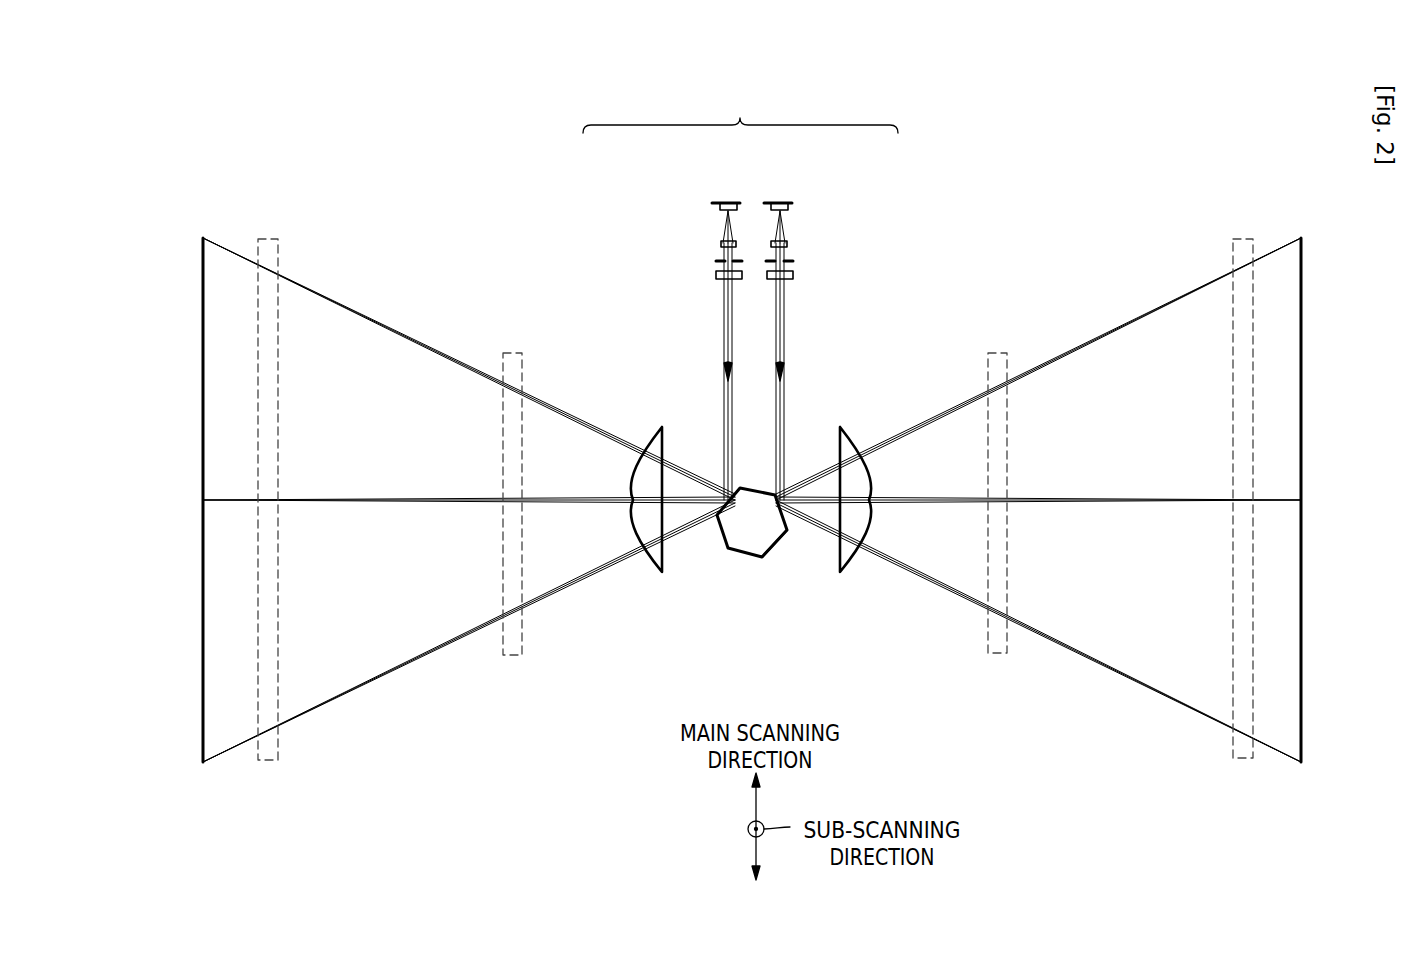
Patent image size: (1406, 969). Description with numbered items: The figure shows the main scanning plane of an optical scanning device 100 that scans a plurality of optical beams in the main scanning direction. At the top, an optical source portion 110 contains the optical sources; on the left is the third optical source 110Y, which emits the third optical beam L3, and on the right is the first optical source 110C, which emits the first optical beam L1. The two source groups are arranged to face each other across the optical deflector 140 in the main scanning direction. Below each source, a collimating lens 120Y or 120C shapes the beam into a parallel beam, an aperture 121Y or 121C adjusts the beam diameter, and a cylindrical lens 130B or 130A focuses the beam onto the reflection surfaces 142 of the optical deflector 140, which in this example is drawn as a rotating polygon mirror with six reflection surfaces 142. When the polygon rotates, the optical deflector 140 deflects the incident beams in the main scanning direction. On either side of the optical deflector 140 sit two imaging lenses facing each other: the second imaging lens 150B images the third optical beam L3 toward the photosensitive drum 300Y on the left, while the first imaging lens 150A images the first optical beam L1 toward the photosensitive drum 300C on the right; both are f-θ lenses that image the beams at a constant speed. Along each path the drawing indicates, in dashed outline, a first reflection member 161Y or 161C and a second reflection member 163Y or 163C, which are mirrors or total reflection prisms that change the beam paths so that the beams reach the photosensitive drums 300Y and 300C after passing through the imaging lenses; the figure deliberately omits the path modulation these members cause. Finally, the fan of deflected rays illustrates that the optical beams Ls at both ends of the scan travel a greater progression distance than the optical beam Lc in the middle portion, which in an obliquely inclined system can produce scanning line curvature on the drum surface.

The optical scanning device 100 is at (375, 123).
The optical source portion 110 is at (740, 111).
The third optical source 110Y is at (722, 203).
The first optical source 110C is at (783, 203).
The collimating lens 120Y is at (720, 243).
The collimating lens 120C is at (788, 243).
The aperture 121Y is at (715, 262).
The aperture 121C is at (793, 262).
The cylindrical lens 130B is at (716, 278).
The cylindrical lens 130A is at (793, 278).
The third optical beam L3 is at (692, 355).
The first optical beam L1 is at (816, 355).
The optical deflector 140 is at (753, 548).
The reflection surface 142 is at (787, 545).
The second imaging lens 150B is at (660, 574).
The first imaging lens 150A is at (841, 574).
The optical beams at both ends Ls is at (365, 687).
The optical beam in the middle portion Lc is at (227, 500).
The first reflection member 161Y is at (511, 656).
The first reflection member 161C is at (998, 654).
The second reflection member 163Y is at (268, 761).
The second reflection member 163C is at (1244, 759).
The photosensitive drum 300Y is at (202, 272).
The photosensitive drum 300C is at (1302, 275).